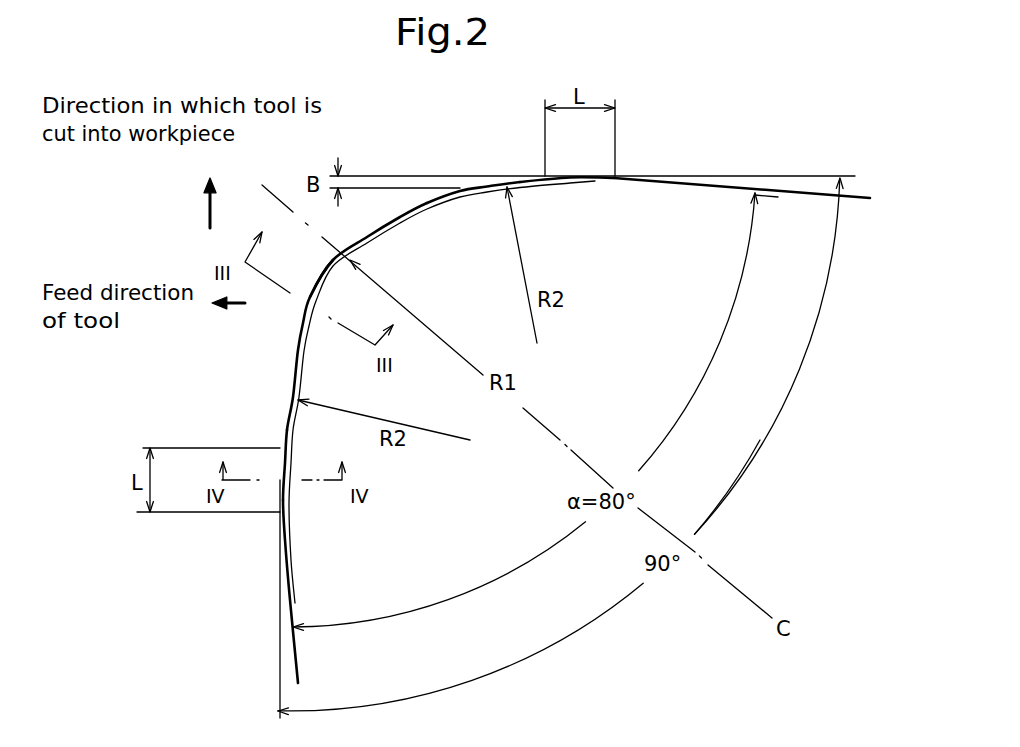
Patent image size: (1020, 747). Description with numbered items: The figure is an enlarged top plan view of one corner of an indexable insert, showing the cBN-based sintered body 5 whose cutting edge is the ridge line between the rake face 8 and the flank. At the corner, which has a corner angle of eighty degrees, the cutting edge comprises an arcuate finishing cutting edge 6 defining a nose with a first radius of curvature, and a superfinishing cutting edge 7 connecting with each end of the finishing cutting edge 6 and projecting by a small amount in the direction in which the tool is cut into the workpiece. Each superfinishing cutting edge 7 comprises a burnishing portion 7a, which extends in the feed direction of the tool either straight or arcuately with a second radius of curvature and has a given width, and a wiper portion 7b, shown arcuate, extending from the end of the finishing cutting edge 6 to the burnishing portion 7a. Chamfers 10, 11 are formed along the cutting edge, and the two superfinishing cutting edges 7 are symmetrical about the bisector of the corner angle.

The cBN-based sintered body 5 is at (742, 522).
The finishing cutting edge 6 is at (300, 322).
The superfinishing cutting edge 7 is at (513, 114).
The burnishing portion 7a is at (570, 176).
The wiper portion 7b is at (487, 183).
The rake face 8 is at (393, 253).
The chamfer 10 is at (332, 272).
The chamfer 11 is at (590, 176).